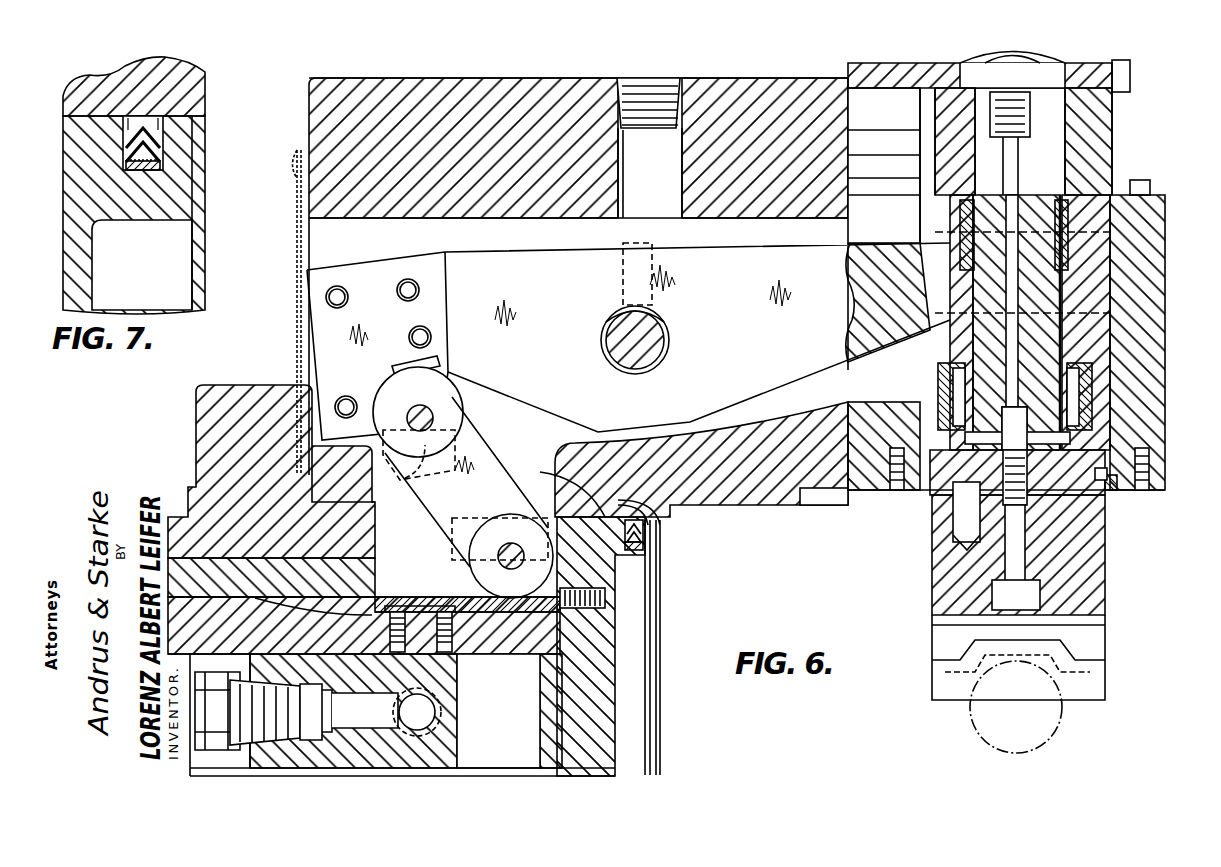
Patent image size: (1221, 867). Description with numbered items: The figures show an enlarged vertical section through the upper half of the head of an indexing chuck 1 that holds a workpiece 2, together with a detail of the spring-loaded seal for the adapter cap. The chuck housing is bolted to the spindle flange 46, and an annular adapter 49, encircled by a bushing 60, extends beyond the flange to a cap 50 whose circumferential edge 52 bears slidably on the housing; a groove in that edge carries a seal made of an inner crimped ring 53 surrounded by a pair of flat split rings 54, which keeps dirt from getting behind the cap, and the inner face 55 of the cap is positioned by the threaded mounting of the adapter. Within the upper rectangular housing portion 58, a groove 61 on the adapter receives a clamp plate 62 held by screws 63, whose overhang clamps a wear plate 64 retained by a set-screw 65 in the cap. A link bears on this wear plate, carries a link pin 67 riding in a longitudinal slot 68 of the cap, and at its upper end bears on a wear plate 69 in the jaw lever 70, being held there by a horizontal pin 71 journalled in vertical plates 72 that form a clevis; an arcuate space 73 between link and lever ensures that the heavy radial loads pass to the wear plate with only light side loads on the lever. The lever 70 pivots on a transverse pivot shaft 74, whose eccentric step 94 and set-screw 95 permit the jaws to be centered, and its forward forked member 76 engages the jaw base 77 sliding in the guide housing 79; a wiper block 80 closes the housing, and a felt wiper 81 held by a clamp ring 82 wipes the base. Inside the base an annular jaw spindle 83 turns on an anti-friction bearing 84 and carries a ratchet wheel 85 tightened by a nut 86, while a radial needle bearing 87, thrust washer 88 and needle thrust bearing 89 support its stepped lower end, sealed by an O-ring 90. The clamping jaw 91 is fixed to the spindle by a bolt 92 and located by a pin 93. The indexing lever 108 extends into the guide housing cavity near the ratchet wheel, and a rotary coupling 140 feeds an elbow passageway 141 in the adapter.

In FIG. 6, the indexing chuck 1 is at (1160, 578).
In FIG. 6, the workpiece 2 is at (972, 728).
In FIG. 6, the spindle flange 46 is at (258, 385).
In FIG. 6, the annular adapter 49 is at (505, 655).
In FIG. 7, the cap 50 is at (83, 263).
In FIG. 6, the cap 50 is at (610, 712).
In FIG. 7, the circumferential edge of cap 52 is at (178, 110).
In FIG. 6, the circumferential edge of cap 52 is at (560, 468).
In FIG. 7, the inner crimped ring 53 is at (160, 168).
In FIG. 6, the inner crimped ring 53 is at (650, 545).
In FIG. 7, the flat split rings 54 is at (140, 150).
In FIG. 6, the flat split rings 54 is at (648, 525).
In FIG. 6, the inner face of cap 55 is at (540, 740).
In FIG. 6, the upper rectangular housing portion 58 is at (478, 78).
In FIG. 6, the bushing 60 is at (360, 578).
In FIG. 6, the longitudinal groove 61 is at (355, 578).
In FIG. 6, the clamp plate 62 is at (445, 650).
In FIG. 6, the screws 63 is at (440, 612).
In FIG. 6, the wear plate 64 is at (522, 600).
In FIG. 6, the set-screw 65 is at (606, 596).
In FIG. 6, the link pin 67 is at (500, 548).
In FIG. 6, the longitudinal slot 68 is at (535, 540).
In FIG. 6, the wear plate 69 is at (420, 362).
In FIG. 6, the jaw lever 70 is at (727, 368).
In FIG. 6, the horizontal pin 71 is at (434, 414).
In FIG. 6, the vertical plates 72 is at (405, 475).
In FIG. 6, the arcuate space 73 is at (380, 388).
In FIG. 6, the pivot shaft 74 is at (606, 352).
In FIG. 6, the forked member 76 is at (935, 250).
In FIG. 6, the jaw base 77 is at (1085, 330).
In FIG. 6, the guide housing 79 is at (1155, 410).
In FIG. 6, the wiper block 80 is at (895, 410).
In FIG. 6, the wiper 81 is at (870, 492).
In FIG. 6, the clamp ring 82 is at (1165, 492).
In FIG. 6, the jaw spindle 83 is at (1050, 285).
In FIG. 6, the anti-friction bearing 84 is at (1110, 232).
In FIG. 6, the ratchet wheel 85 is at (1108, 140).
In FIG. 6, the nut 86 is at (1060, 90).
In FIG. 6, the radial needle bearing 87 is at (1095, 380).
In FIG. 6, the thrust washer 88 is at (1120, 465).
In FIG. 6, the needle thrust bearing 89 is at (1085, 492).
In FIG. 6, the O-ring 90 is at (1100, 490).
In FIG. 6, the workpiece clamping jaw 91 is at (935, 580).
In FIG. 6, the bolt 92 is at (1010, 612).
In FIG. 6, the pin 93 is at (960, 525).
In FIG. 6, the eccentric step 94 is at (650, 315).
In FIG. 6, the set-screw 95 is at (654, 262).
In FIG. 6, the lever 108 is at (900, 150).
In FIG. 6, the rotary coupling 140 is at (212, 750).
In FIG. 6, the elbow passageway 141 is at (430, 716).